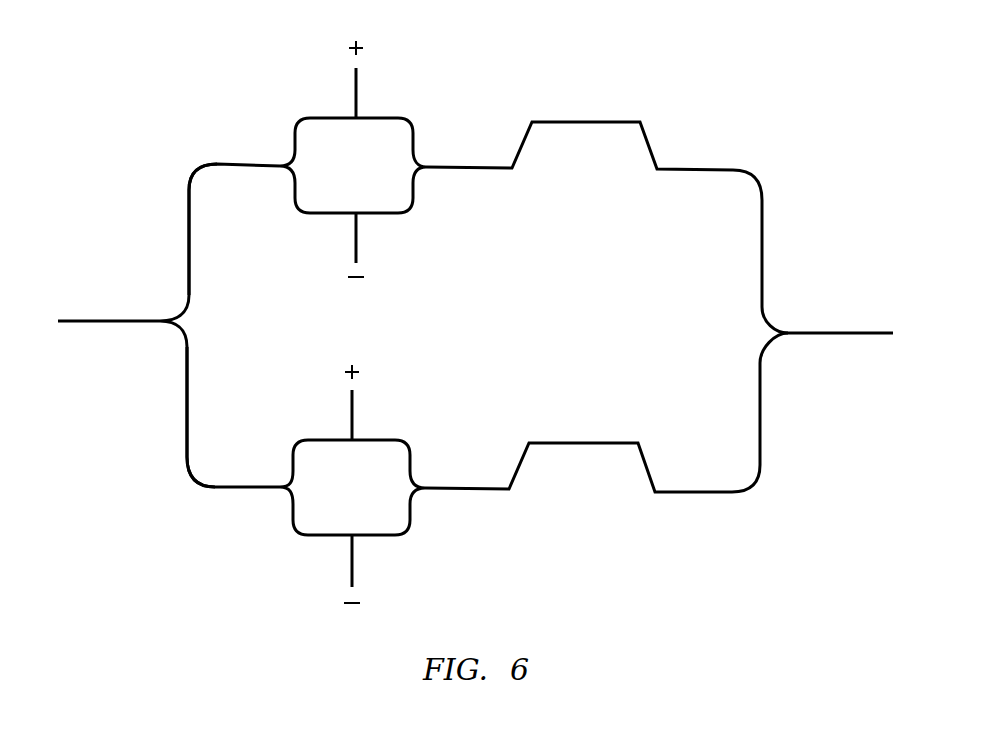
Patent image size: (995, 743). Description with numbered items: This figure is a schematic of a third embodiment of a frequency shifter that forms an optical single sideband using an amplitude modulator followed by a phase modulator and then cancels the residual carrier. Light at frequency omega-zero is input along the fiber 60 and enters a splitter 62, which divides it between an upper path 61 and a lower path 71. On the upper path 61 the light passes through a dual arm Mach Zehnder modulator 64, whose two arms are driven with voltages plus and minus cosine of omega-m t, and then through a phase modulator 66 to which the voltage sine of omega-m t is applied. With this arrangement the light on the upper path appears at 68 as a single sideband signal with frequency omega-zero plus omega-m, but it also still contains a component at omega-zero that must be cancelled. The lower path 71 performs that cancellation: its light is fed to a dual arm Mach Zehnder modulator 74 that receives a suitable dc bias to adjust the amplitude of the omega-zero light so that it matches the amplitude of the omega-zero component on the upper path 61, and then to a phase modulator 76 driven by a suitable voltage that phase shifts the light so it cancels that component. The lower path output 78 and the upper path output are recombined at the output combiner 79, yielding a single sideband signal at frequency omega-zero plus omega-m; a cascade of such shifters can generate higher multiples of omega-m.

The fiber 60 is at (120, 321).
The upper path 61 is at (202, 168).
The splitter 62 is at (160, 323).
The first Mach-Zehnder modulator 64 is at (399, 118).
The phase modulator 66 is at (650, 140).
The upper path output 68 is at (764, 205).
The lower path 71 is at (187, 466).
The dual arm Mach Zehnder modulator 74 is at (395, 440).
The phase modulator 76 is at (645, 458).
The lower arm output waveguide 78 is at (762, 427).
The output Y-branch combiner 79 is at (793, 332).